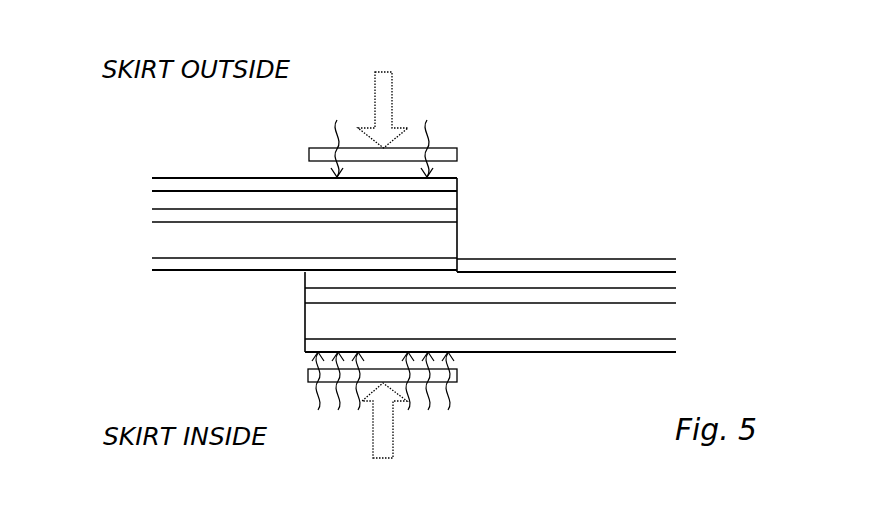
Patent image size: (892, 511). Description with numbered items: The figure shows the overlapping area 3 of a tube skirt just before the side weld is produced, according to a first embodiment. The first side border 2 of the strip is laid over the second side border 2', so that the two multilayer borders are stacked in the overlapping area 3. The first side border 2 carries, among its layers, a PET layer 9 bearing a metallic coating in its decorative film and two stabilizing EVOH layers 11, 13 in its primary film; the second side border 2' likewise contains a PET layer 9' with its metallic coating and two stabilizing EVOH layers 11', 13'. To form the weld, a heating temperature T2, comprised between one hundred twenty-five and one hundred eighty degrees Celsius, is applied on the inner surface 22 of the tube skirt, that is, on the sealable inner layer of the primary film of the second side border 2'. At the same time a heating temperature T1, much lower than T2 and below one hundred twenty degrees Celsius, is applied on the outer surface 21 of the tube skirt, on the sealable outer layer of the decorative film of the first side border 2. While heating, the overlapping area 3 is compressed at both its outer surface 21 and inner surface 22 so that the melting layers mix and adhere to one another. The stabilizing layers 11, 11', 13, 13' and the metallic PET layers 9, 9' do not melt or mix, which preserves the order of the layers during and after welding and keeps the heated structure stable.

The first side border 2 is at (377, 199).
The second side border 2' is at (531, 315).
The overlapping area 3 is at (384, 427).
The PET layer bearing the metallic coating 9 is at (270, 222).
The stabilizing EVOH layer 11 is at (274, 241).
The stabilizing EVOH layer 13 is at (264, 272).
The PET layer bearing the metallic coating 9' is at (523, 301).
The stabilizing EVOH layer 11' is at (522, 321).
The stabilizing EVOH layer 13' is at (531, 352).
The outer surface 21 is at (227, 176).
The inner surface 22 is at (567, 354).
The heating temperature T1 is at (383, 124).
The heating temperature T2 is at (303, 462).